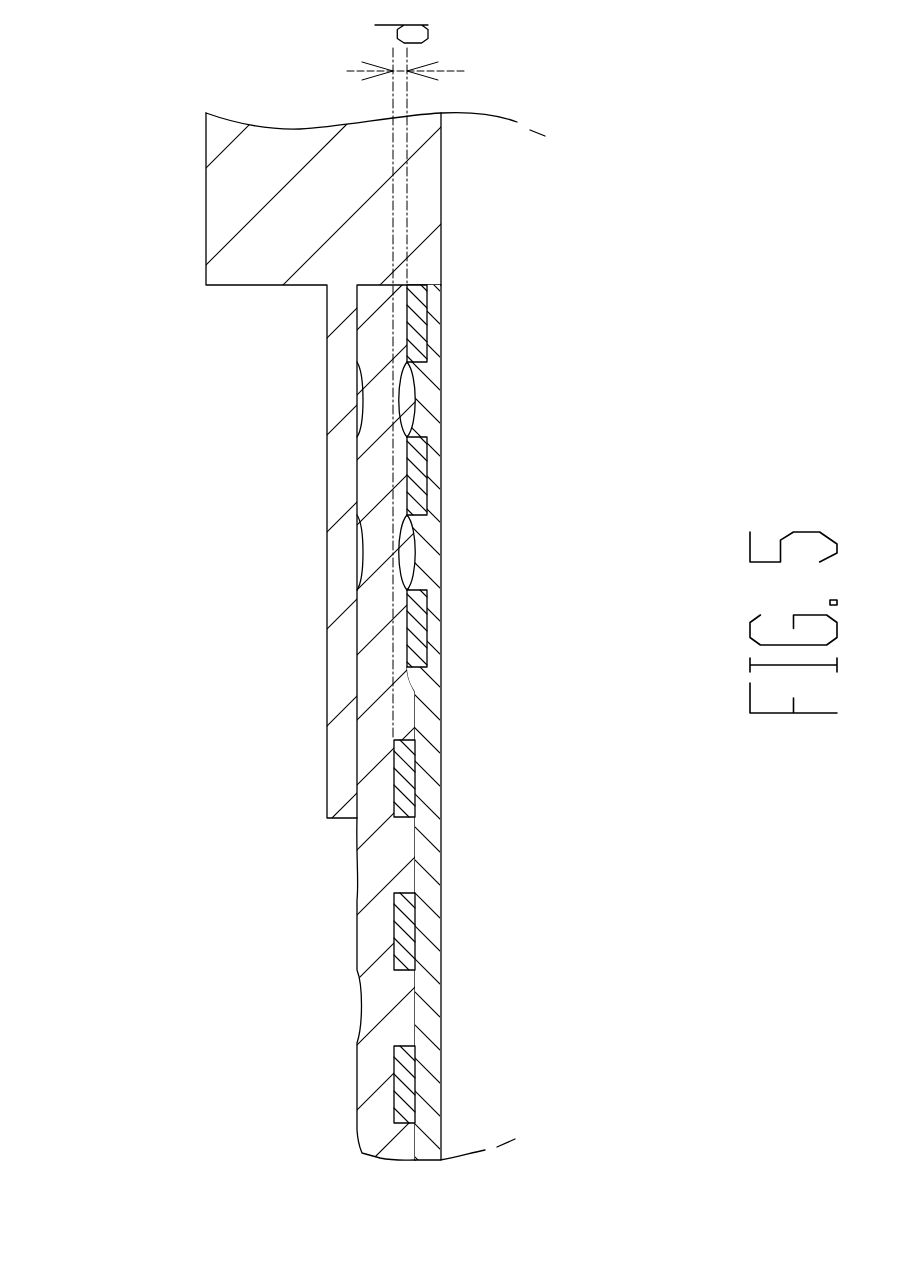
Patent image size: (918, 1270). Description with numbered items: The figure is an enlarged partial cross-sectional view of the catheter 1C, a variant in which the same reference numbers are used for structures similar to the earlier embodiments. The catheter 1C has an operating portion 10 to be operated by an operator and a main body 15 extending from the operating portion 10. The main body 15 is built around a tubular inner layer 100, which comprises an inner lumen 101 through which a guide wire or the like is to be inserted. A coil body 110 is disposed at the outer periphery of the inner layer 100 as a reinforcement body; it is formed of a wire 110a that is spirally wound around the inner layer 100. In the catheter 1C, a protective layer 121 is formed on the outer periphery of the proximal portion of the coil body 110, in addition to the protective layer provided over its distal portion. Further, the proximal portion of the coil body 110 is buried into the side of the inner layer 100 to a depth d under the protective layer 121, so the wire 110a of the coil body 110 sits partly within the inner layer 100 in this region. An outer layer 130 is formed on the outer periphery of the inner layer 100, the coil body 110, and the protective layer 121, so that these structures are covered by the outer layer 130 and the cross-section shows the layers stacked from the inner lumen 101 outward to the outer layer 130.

The catheter 1C is at (152, 405).
The operating portion 10 is at (220, 199).
The main body 15 is at (359, 1046).
The inner layer 100 is at (427, 1007).
The inner lumen 101 is at (442, 701).
The coil body 110 is at (413, 776).
The wire 110a is at (418, 488).
The protective layer 121 is at (412, 553).
The outer layer 130 is at (372, 753).